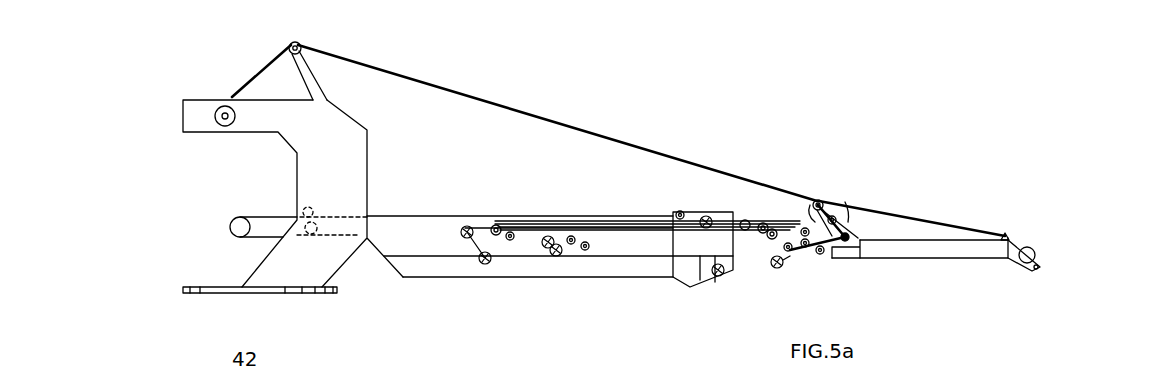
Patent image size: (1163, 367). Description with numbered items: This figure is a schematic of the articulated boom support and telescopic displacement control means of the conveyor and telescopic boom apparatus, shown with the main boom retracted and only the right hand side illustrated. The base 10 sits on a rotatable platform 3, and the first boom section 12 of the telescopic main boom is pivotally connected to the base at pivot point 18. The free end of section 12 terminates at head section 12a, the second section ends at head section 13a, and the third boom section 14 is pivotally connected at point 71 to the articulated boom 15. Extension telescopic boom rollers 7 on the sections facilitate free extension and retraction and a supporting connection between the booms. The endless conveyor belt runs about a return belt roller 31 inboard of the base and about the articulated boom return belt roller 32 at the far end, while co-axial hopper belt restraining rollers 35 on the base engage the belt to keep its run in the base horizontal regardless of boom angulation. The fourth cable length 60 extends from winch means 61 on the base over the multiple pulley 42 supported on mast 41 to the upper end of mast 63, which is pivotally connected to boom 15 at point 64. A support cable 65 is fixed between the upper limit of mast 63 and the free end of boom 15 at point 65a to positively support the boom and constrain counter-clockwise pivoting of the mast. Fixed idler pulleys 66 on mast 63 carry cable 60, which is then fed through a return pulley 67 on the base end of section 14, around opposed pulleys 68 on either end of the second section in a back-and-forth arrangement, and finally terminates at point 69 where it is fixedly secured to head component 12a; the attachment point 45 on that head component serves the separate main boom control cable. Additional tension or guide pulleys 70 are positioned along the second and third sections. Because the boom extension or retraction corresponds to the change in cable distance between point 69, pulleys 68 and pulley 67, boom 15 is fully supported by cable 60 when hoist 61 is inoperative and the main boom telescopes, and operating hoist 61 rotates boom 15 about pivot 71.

The rotatable platform 3 is at (337, 290).
The extension telescopic boom rollers 7 is at (480, 258).
The base 10 is at (367, 176).
The first boom section 12 is at (616, 280).
The head section of first boom section 12a is at (690, 281).
The head section of second boom section 13a is at (716, 283).
The third boom section 14 is at (784, 266).
The articulated boom 15 is at (912, 260).
The pivot point 18 is at (322, 220).
The return pulley or belt roller 31 is at (230, 227).
The articulated boom return belt roller 32 is at (1040, 255).
The hopper belt restraining rollers 35 is at (302, 210).
The mast 41 is at (320, 90).
The multiple pulley 42 is at (302, 47).
The attachment point on head component 12(a) 45 is at (690, 210).
The fourth cable length 60 is at (234, 96).
The winch means 61 is at (222, 126).
The mast 63 is at (816, 199).
The pivot point 64 is at (850, 237).
The support cable 65 is at (985, 229).
The attachment point 65a is at (1010, 237).
The fixed idler pulleys 66 is at (852, 204).
The return pulley 67 is at (556, 256).
The opposed pulleys 68 is at (496, 225).
The cable termination point 69 is at (676, 213).
The tension or guide pulleys 70 is at (514, 235).
The pivot point 71 is at (835, 258).